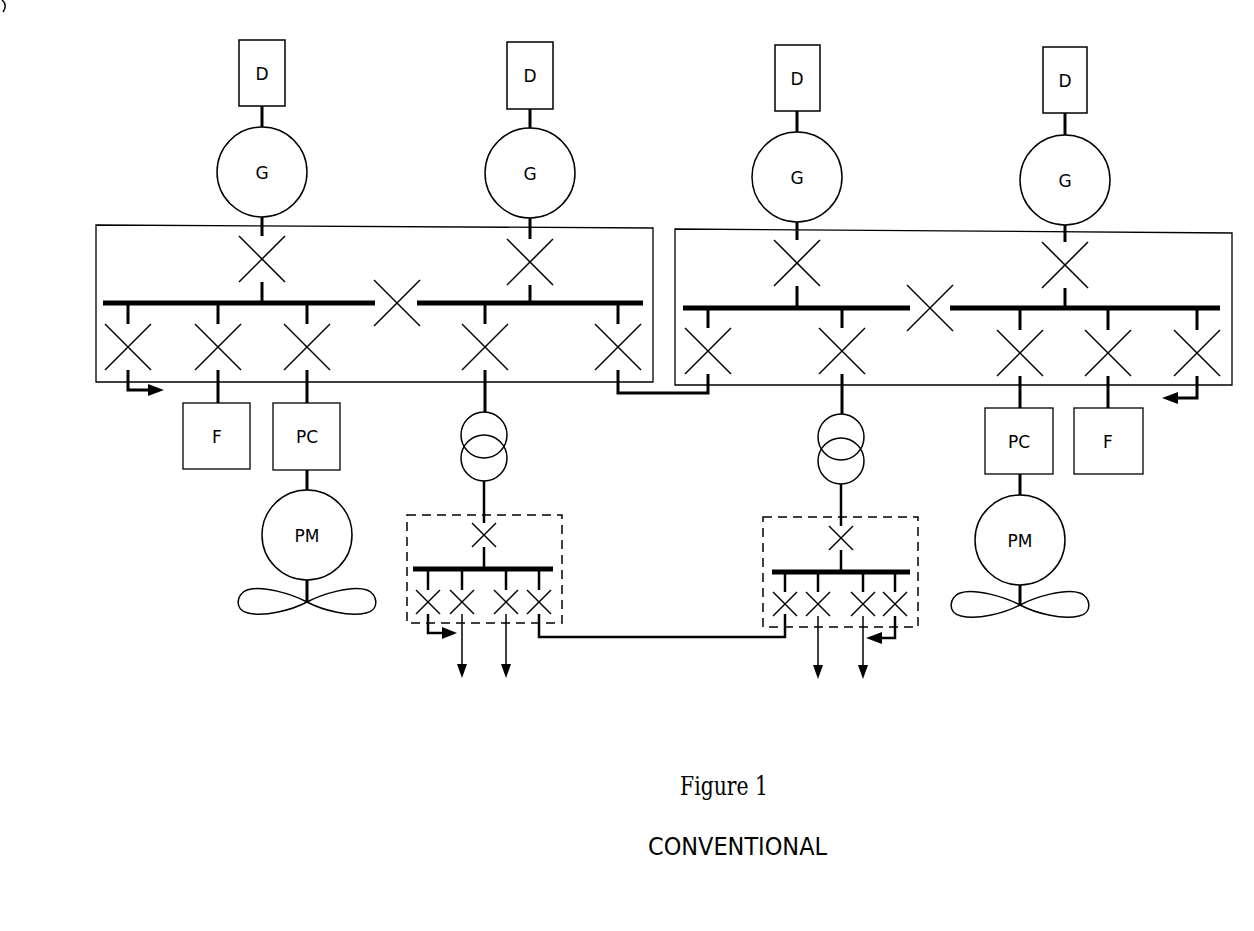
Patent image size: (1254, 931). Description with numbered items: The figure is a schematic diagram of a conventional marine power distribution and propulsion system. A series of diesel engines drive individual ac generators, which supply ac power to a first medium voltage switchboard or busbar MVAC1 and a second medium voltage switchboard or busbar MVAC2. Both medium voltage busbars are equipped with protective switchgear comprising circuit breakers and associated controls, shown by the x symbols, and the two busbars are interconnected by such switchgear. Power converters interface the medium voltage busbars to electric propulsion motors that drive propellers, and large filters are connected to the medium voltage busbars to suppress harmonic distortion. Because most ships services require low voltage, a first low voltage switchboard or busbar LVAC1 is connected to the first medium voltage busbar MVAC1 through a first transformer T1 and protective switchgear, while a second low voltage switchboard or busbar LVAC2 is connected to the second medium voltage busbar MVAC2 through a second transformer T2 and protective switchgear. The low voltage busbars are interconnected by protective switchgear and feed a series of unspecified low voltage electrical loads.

The first medium voltage switchboard or busbar MVAC1 is at (402, 318).
The second medium voltage switchboard or busbar MVAC2 is at (953, 321).
The first transformer T1 is at (471, 467).
The second transformer T2 is at (828, 470).
The first low voltage switchboard or busbar LVAC1 is at (596, 609).
The second low voltage switchboard or busbar LVAC2 is at (840, 611).